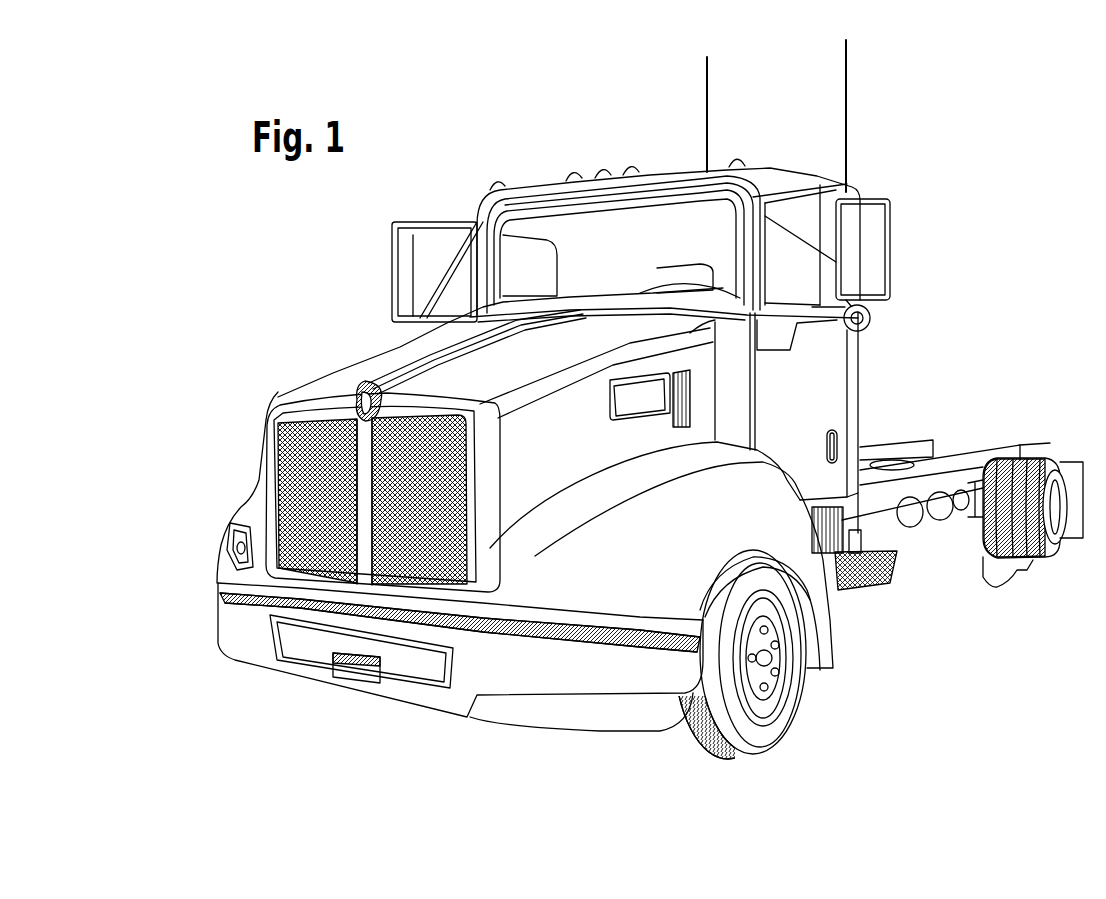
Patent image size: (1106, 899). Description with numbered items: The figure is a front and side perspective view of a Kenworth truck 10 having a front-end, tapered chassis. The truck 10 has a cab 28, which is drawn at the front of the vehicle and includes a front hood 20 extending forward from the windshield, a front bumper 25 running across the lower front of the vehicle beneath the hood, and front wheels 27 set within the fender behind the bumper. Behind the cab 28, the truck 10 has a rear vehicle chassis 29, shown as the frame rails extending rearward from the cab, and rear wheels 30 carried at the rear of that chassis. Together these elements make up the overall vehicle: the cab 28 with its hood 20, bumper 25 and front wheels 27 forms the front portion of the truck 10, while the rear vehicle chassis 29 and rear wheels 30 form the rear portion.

The truck 10 is at (347, 343).
The front hood 20 is at (501, 383).
The front bumper 25 is at (545, 693).
The front wheels 27 is at (780, 713).
The cab 28 is at (770, 167).
The rear vehicle chassis 29 is at (906, 440).
The rear wheels 30 is at (1033, 531).